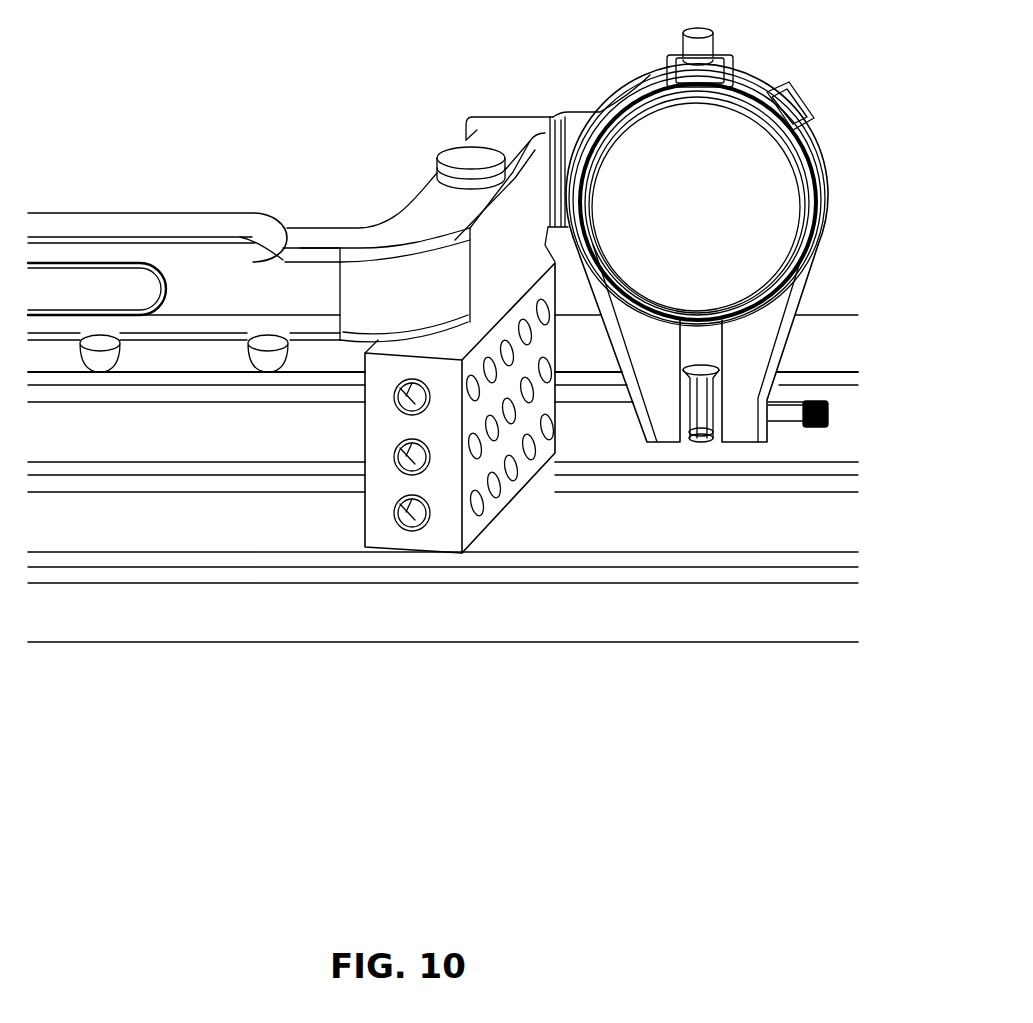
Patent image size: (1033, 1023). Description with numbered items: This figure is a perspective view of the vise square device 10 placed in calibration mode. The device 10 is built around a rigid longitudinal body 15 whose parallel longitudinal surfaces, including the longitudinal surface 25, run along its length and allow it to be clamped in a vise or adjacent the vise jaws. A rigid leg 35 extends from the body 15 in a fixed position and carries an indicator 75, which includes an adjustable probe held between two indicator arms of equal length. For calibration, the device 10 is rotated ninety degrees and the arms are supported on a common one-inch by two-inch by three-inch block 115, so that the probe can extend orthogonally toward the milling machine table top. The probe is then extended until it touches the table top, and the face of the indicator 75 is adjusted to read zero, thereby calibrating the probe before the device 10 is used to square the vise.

The vise square device 10 is at (500, 88).
The rigid longitudinal body 15 is at (195, 329).
The longitudinal surface 25 is at (180, 219).
The rigid leg 35 is at (478, 253).
The indicator 75 is at (665, 223).
The 1-2-3 block 115 is at (377, 500).